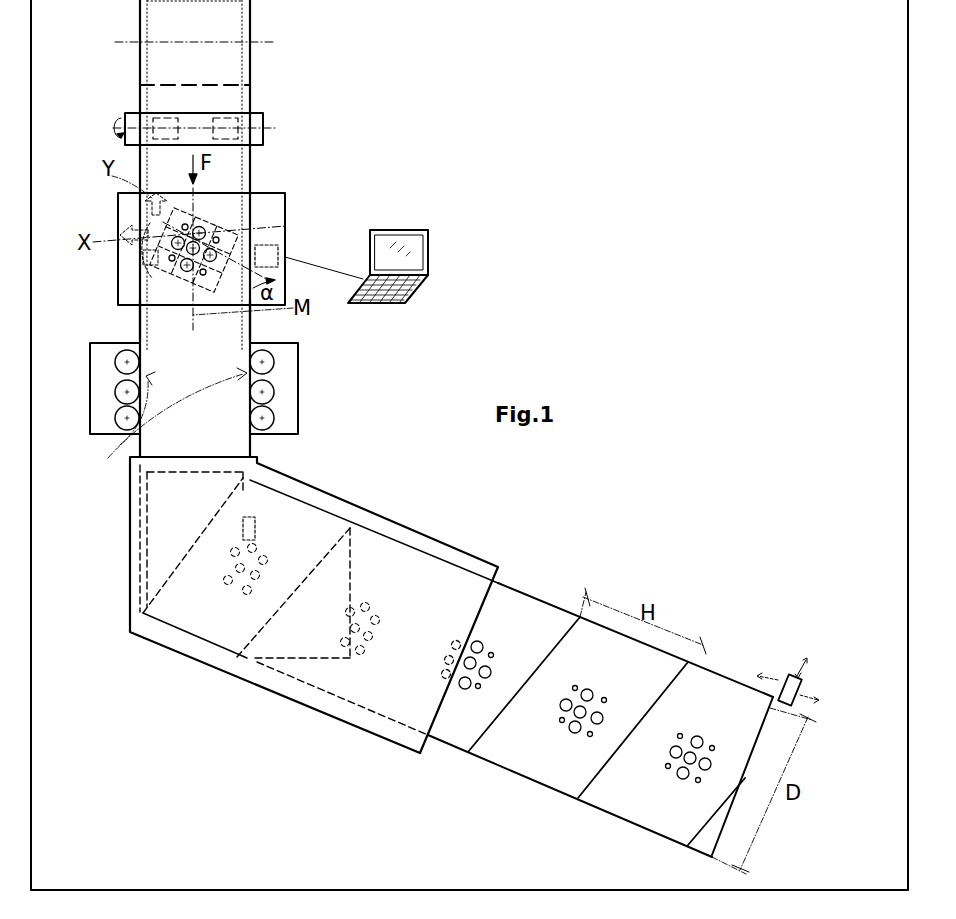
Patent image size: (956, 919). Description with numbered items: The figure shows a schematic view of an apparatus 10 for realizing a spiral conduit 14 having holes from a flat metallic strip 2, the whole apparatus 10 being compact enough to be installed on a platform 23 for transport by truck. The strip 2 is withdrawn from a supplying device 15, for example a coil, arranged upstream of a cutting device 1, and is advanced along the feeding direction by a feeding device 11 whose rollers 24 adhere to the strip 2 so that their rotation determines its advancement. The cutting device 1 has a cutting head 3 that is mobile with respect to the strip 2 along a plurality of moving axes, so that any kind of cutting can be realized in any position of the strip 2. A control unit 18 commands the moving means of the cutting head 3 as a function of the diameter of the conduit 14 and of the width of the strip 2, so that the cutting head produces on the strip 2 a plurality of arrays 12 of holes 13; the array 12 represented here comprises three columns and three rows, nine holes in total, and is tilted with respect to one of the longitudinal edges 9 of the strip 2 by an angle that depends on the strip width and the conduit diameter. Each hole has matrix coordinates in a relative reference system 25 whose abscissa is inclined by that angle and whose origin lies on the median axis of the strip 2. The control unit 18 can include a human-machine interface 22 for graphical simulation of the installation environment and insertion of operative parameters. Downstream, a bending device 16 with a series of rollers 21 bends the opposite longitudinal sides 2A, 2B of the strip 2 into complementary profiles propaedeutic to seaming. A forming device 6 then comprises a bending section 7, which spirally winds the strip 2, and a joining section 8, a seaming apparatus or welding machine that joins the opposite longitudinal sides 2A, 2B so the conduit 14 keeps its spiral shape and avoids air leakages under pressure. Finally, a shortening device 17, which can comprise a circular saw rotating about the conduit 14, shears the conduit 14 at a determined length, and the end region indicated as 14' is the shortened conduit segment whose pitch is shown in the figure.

The cutting device 1 is at (103, 208).
The flat metallic strip 2 is at (202, 367).
The longitudinal side of the strip 2A is at (140, 318).
The longitudinal side of the strip 2B is at (250, 328).
The cutting head 3 is at (150, 246).
The forming device 6 is at (162, 633).
The bending section 7 is at (243, 512).
The joining section 8 is at (243, 532).
The longitudinal edges of the strip 9 is at (169, 420).
The apparatus 10 is at (398, 112).
The feeding device 11 is at (263, 138).
The array of holes 12 is at (244, 233).
The holes 13 is at (170, 268).
The spiral conduit 14 is at (622, 720).
The conveyor end 14' is at (795, 776).
The supplying device 15 is at (227, 55).
The bending device 16 is at (112, 358).
The shortening device 17 is at (800, 680).
The control unit 18 is at (273, 262).
The rollers 21 is at (272, 368).
The human-machine interface 22 is at (428, 280).
The platform 23 is at (801, 31).
The rollers 24 is at (222, 122).
The relative reference system 25 is at (205, 228).